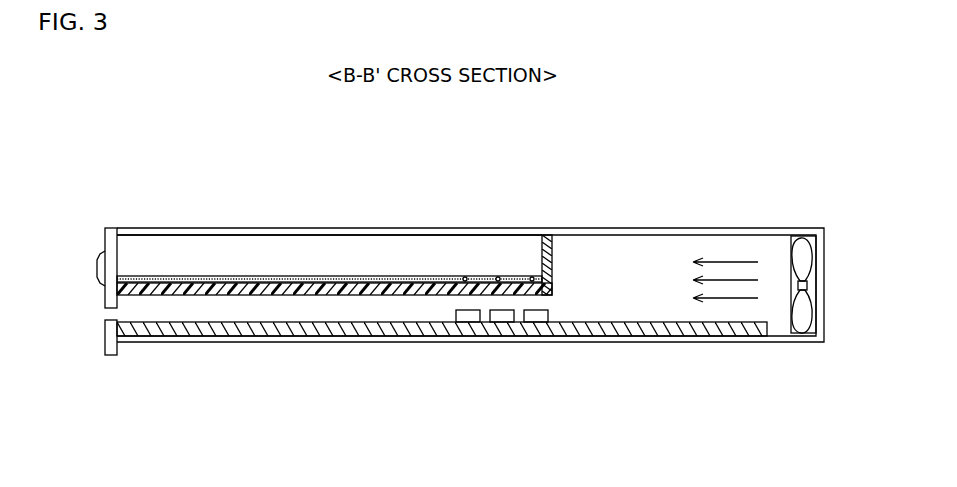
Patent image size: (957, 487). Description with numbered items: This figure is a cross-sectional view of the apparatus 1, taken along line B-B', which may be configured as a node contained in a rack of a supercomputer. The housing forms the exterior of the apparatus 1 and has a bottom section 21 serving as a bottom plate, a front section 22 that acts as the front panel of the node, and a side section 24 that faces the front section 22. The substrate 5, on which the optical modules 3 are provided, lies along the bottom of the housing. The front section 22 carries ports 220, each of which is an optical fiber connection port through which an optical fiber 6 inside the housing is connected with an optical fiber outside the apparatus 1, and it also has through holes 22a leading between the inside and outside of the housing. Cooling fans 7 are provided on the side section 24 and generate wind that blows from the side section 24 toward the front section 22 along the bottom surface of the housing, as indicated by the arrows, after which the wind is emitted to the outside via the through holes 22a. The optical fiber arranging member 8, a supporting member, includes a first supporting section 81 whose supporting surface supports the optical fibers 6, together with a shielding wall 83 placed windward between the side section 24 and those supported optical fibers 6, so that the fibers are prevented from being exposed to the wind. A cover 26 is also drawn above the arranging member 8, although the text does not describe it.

The apparatus 1 is at (790, 105).
The optical modules 3 is at (468, 320).
The substrate 5 is at (223, 332).
The optical fibers 6 is at (320, 277).
The cooling fans 7 is at (803, 237).
The optical fiber arranging member 8 is at (354, 217).
The bottom section 21 is at (161, 340).
The front section 22 is at (112, 230).
The through holes 22a is at (110, 318).
The side section 24 is at (825, 290).
The cover 26 is at (147, 233).
The first supporting section 81 is at (427, 283).
The shielding wall 83 is at (566, 242).
The ports 220 is at (98, 258).